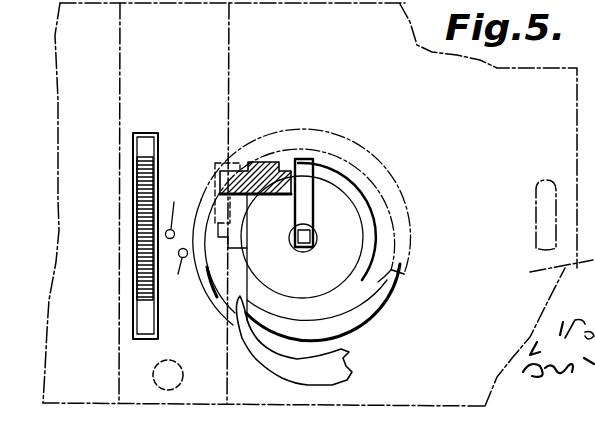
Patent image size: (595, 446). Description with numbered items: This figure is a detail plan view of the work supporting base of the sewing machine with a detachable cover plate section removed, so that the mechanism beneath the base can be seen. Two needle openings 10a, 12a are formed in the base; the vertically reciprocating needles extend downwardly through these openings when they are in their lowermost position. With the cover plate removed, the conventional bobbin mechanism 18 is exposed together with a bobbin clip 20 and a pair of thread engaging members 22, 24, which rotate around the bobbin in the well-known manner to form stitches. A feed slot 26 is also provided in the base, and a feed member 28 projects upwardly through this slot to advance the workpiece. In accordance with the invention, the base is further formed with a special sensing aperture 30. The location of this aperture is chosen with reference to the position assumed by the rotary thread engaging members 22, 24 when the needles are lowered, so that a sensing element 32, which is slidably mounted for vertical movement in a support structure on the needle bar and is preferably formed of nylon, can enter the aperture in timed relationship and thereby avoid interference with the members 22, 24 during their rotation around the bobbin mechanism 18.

The needle opening 10a is at (177, 211).
The needle opening 12a is at (176, 276).
The bobbin mechanism 18 is at (357, 197).
The bobbin clip 20 is at (303, 170).
The thread engaging member 22 is at (328, 360).
The thread engaging member 24 is at (216, 292).
The feed slot 26 is at (147, 147).
The feed member 28 is at (148, 182).
The sensing aperture 30 is at (232, 165).
The sensing element 32 is at (277, 170).